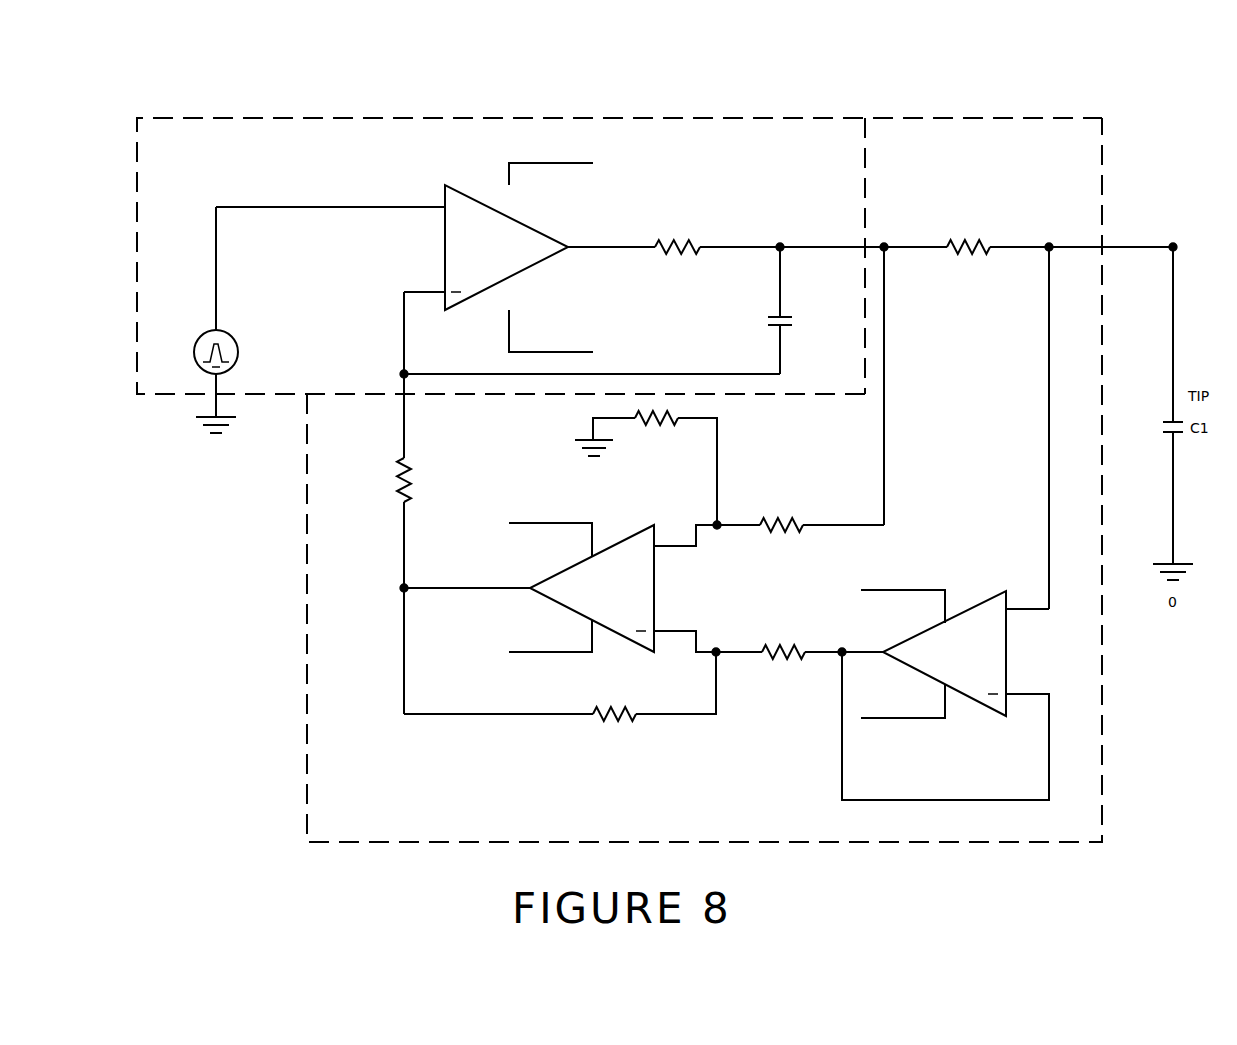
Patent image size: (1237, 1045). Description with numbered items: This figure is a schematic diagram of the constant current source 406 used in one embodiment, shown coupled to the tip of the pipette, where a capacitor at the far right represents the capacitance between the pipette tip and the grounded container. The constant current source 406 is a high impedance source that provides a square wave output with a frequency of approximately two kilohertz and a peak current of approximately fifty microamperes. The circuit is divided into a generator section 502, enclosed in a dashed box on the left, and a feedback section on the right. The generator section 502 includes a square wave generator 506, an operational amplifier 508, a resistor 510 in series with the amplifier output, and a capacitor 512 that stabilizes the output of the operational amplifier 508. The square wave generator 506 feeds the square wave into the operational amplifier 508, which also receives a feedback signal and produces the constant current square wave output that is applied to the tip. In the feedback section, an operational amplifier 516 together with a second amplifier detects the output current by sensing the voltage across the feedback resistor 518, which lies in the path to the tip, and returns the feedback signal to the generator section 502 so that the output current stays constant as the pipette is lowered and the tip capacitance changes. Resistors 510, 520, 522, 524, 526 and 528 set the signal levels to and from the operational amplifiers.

The constant current source 406 is at (970, 160).
The generator section 502 is at (705, 177).
The square wave generator 506 is at (240, 352).
The operational amplifier 508 is at (522, 222).
The resistor 510 is at (698, 246).
The capacitor 512 is at (766, 316).
The operational amplifier 516 is at (976, 598).
The feedback resistor 518 is at (984, 246).
The resistor 520 is at (790, 522).
The resistor 522 is at (659, 421).
The resistor 524 is at (772, 658).
The resistor 526 is at (607, 716).
The resistor 528 is at (400, 462).